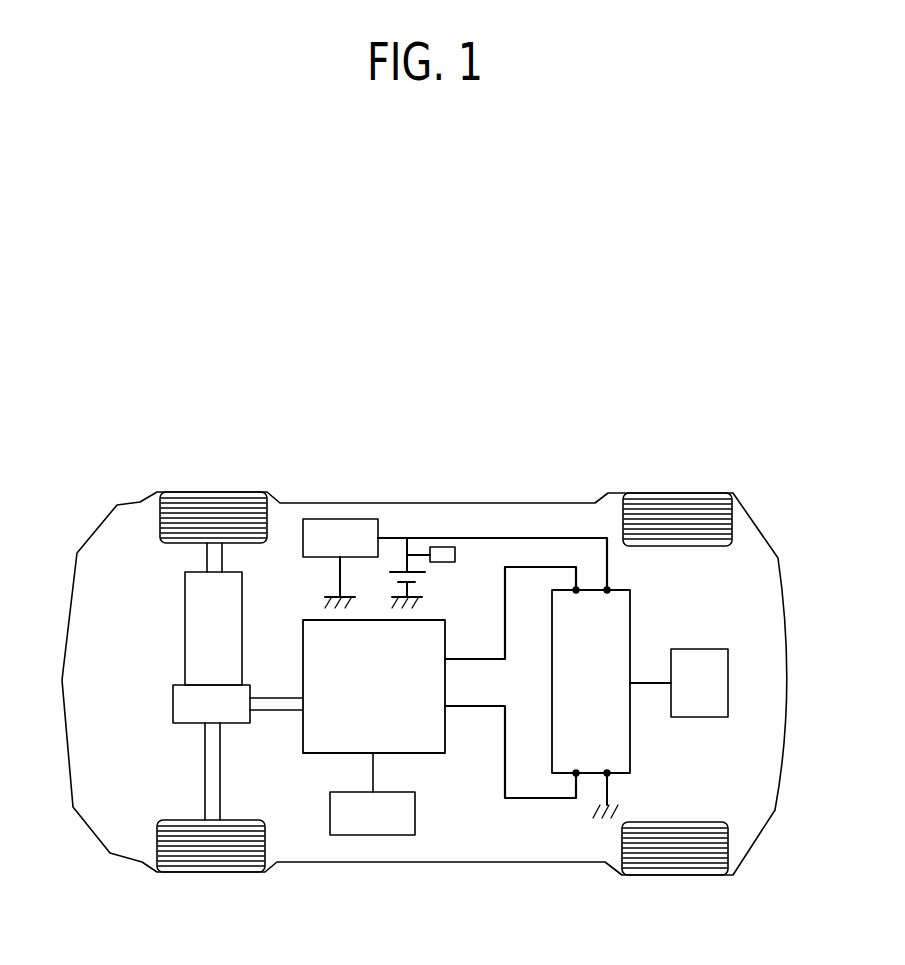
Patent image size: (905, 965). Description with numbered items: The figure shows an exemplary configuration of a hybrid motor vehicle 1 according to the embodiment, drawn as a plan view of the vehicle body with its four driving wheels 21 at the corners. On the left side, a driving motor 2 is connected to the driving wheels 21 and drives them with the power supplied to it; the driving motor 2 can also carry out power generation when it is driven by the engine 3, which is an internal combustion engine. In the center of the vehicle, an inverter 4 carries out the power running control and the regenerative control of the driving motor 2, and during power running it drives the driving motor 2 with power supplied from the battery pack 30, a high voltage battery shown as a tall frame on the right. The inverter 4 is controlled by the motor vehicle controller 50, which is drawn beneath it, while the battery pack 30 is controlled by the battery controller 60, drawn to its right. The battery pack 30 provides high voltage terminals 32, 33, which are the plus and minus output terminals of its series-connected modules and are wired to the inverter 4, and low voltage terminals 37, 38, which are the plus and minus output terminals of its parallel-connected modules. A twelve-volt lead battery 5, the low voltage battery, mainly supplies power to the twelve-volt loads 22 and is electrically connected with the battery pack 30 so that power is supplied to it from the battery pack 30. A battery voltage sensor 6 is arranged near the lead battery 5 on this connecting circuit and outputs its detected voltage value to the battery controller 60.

The hybrid motor vehicle 1 is at (532, 427).
The driving motor 2 is at (173, 703).
The engine 3 is at (185, 625).
The inverter 4 is at (323, 735).
The 12V lead battery 5 is at (398, 570).
The battery voltage sensor 6 is at (442, 550).
The driving wheels 21 is at (212, 510).
The 12V loads 22 is at (340, 535).
The battery pack 30 is at (552, 733).
The high voltage terminal 32 is at (576, 590).
The high voltage terminal 33 is at (576, 773).
The low voltage terminal 37 is at (607, 590).
The low voltage terminal 38 is at (607, 773).
The motor vehicle controller 50 is at (368, 838).
The battery controller 60 is at (710, 680).